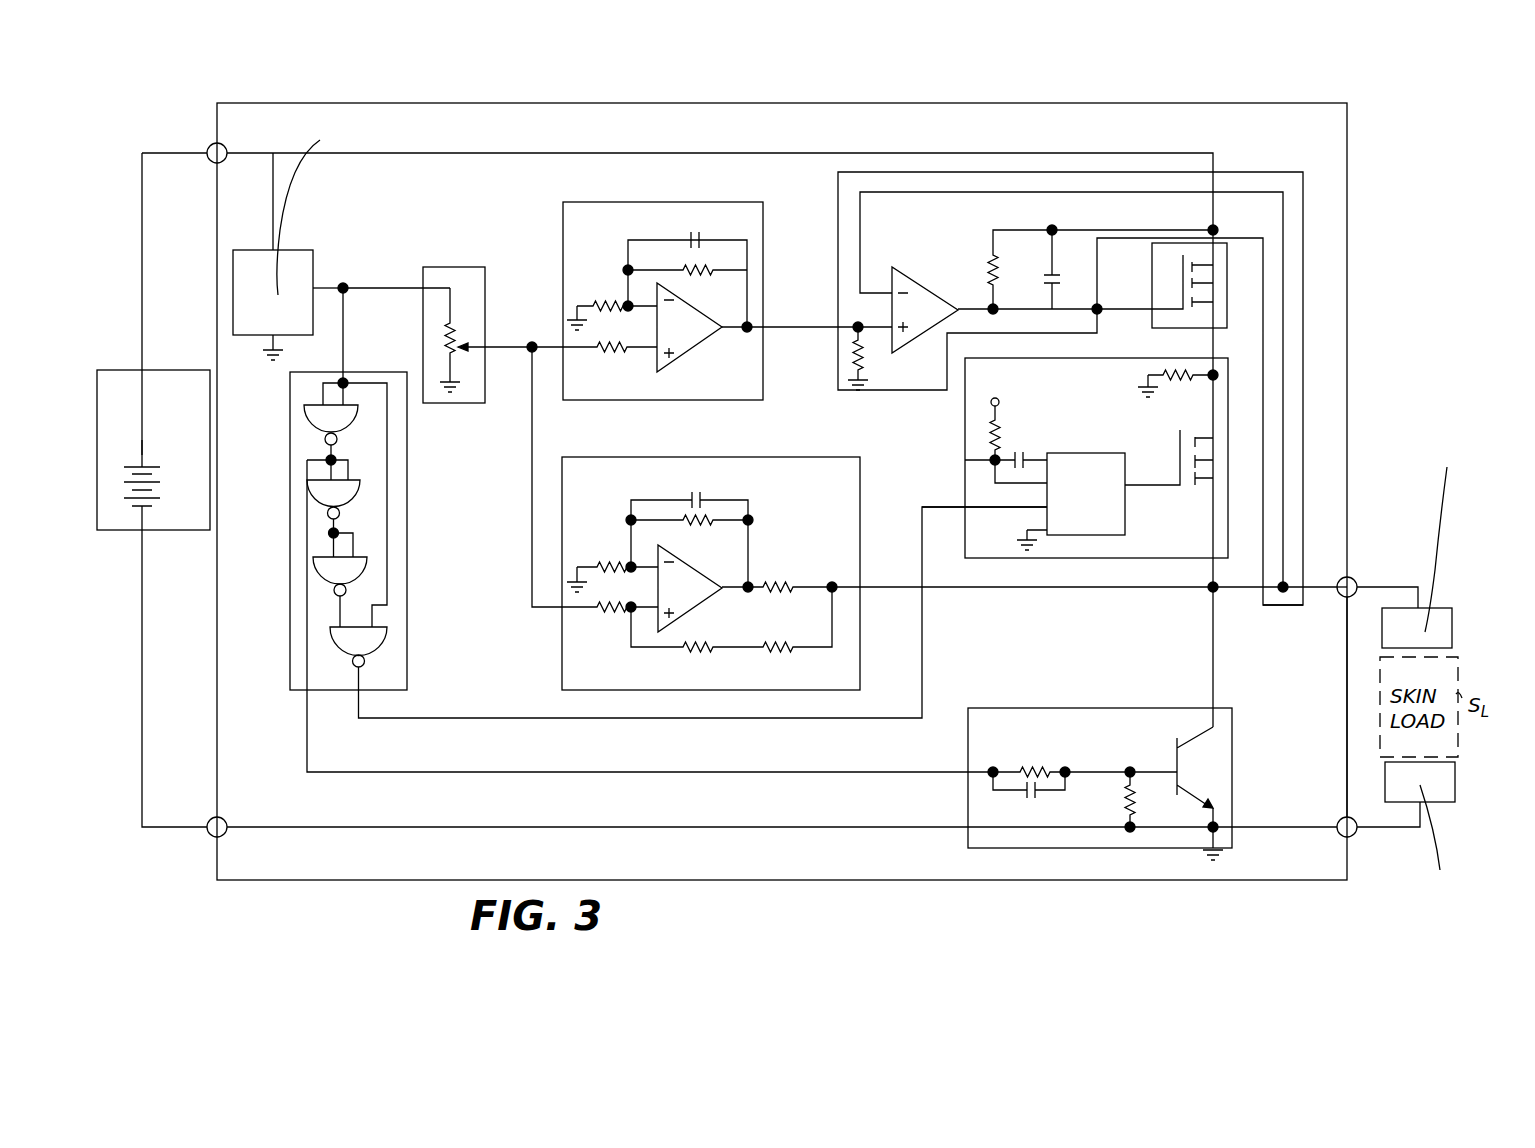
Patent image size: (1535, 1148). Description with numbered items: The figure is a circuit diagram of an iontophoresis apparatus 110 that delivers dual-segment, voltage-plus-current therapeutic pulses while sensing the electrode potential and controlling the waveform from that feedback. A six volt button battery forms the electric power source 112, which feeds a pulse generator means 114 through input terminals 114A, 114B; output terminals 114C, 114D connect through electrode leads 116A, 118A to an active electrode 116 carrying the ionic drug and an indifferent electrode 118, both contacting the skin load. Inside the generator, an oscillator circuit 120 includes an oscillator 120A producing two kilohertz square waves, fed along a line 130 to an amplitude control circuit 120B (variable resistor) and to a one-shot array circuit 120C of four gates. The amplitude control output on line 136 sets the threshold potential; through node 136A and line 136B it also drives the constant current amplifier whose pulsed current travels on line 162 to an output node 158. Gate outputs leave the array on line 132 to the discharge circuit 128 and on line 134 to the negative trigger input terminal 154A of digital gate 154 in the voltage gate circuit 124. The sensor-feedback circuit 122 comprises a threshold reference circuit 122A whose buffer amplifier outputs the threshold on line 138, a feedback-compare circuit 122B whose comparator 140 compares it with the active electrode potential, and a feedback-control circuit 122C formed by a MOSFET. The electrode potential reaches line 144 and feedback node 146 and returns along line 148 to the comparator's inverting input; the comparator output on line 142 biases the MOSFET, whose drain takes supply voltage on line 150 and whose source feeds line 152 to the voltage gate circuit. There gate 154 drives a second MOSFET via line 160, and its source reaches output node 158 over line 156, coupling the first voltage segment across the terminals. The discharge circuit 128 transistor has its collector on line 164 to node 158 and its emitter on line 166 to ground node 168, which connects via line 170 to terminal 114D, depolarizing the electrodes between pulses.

The apparatus 110 is at (203, 140).
The electric power source 112 is at (152, 378).
The pulse generator means 114 is at (438, 104).
The input terminal 114A is at (223, 145).
The input terminal 114B is at (224, 820).
The output terminal 114C is at (1338, 598).
The output terminal 114D is at (1338, 820).
The active electrode 116 is at (1425, 632).
The electrode lead 116A is at (1410, 585).
The indifferent electrode 118 is at (1430, 800).
The electrode lead 118A is at (1400, 830).
The oscillator circuit 120 is at (382, 406).
The oscillator 120A is at (283, 252).
The amplitude control circuit 120B is at (455, 255).
The one-shot array circuit 120C is at (408, 520).
The sensor-feedback circuit 122 is at (896, 381).
The threshold reference circuit 122A is at (562, 250).
The feedback-compare circuit 122B is at (1031, 381).
The feedback-control circuit 122C is at (1150, 262).
The voltage gate circuit 124 is at (1059, 460).
The discharge circuit 128 is at (1100, 772).
The line 130 is at (322, 290).
The line 132 is at (593, 785).
The line 134 is at (548, 727).
The line 136 is at (503, 342).
The node 136A is at (525, 352).
The line 136B is at (533, 505).
The line 138 is at (795, 333).
The comparator 140 is at (918, 272).
The line 142 is at (1115, 315).
The line 144 is at (1350, 575).
The feedback node 146 is at (1275, 612).
The line 148 is at (968, 195).
The line 150 is at (1218, 233).
The line 152 is at (1215, 356).
The digital gate 154 is at (1085, 453).
The negative trigger input terminal 154A is at (1030, 507).
The line 156 is at (1213, 527).
The output node 158 is at (1208, 593).
The line 160 is at (1168, 487).
The line 162 is at (1000, 595).
The line 164 is at (1217, 668).
The line 166 is at (1207, 808).
The ground node 168 is at (1185, 848).
The line 170 is at (1258, 827).